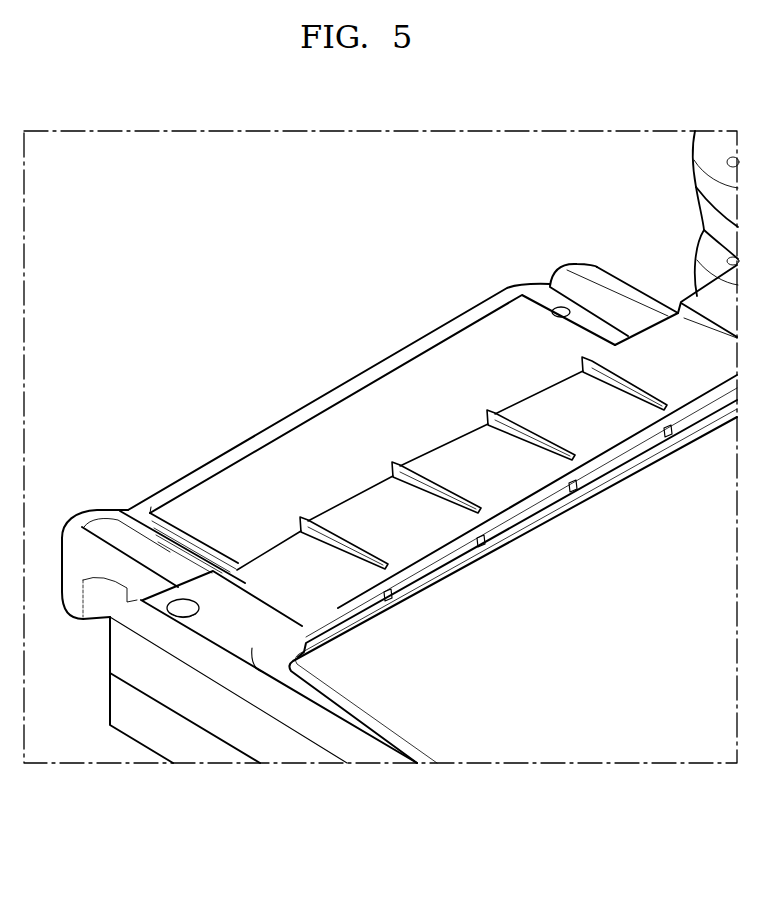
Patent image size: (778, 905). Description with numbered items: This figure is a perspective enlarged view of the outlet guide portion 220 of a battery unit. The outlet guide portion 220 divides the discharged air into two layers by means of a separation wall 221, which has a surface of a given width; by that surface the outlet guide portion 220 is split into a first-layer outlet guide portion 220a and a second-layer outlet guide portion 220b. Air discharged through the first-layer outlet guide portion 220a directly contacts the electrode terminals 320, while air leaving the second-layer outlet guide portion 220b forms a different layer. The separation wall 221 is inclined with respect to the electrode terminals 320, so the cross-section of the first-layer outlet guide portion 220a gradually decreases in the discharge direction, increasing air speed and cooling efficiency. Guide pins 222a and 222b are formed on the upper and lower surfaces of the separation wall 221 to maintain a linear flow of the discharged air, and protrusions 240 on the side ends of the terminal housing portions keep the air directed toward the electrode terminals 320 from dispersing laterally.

The protrusions 240 is at (108, 524).
The electrode terminals 320 is at (462, 352).
The separation wall 221 is at (483, 457).
The guide pin 222b is at (645, 392).
The guide pin 222a is at (483, 548).
The outlet guide portion 220 is at (301, 360).
The first-layer outlet guide portion 220a is at (347, 618).
The second-layer outlet guide portion 220b is at (302, 605).